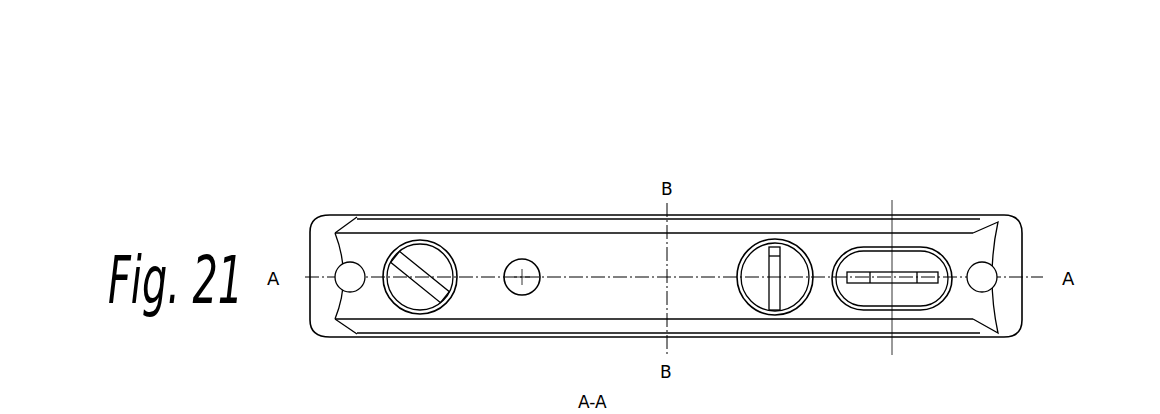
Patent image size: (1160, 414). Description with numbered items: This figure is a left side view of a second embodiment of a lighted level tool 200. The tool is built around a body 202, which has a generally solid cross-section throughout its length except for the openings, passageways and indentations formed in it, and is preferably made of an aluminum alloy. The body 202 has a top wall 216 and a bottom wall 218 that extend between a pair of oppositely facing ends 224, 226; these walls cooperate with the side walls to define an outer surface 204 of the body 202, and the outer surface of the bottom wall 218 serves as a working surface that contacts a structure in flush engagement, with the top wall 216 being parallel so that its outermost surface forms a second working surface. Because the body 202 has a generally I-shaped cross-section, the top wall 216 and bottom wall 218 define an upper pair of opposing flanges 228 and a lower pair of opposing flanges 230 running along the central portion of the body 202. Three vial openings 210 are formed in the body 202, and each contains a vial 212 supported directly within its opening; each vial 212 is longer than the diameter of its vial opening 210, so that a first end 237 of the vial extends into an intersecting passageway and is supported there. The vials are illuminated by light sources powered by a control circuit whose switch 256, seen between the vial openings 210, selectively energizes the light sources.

The lighted level tool 200 is at (808, 68).
The body 202 is at (967, 253).
The outer surface 204 is at (597, 253).
The vial openings 210 is at (422, 258).
The vial 212 is at (428, 289).
The top wall 216 is at (370, 216).
The bottom wall 218 is at (361, 338).
The end 224 is at (1020, 298).
The end 226 is at (312, 241).
The upper pair of opposing flanges 228 is at (500, 231).
The lower pair of opposing flanges 230 is at (503, 322).
The first end of vial 237 is at (778, 246).
The switch 256 is at (530, 288).